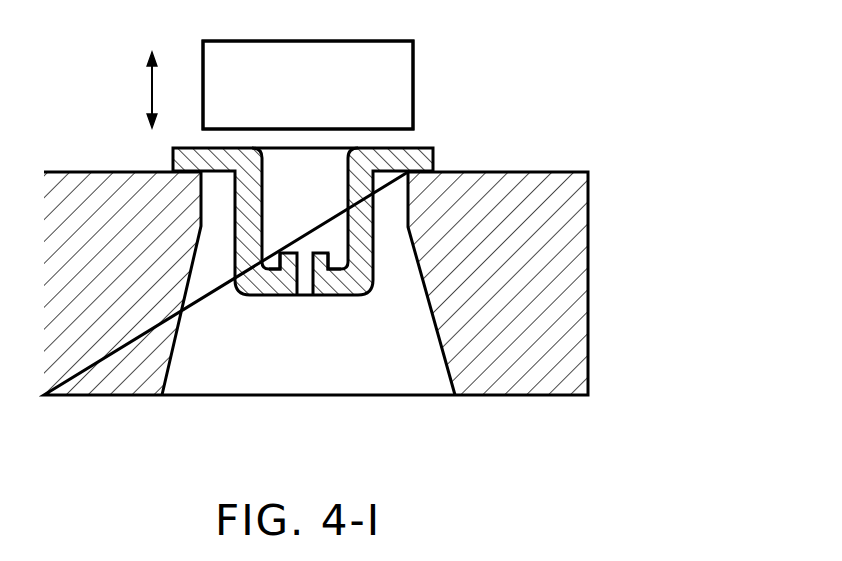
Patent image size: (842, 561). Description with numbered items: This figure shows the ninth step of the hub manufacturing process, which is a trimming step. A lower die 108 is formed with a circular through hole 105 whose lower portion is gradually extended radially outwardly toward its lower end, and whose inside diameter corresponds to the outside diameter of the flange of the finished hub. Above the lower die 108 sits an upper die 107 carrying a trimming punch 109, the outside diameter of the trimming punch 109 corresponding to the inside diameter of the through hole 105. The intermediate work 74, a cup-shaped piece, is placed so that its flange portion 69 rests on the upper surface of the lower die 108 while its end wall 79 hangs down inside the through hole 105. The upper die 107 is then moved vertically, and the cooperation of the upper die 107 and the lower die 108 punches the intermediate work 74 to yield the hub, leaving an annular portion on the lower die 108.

The flange portion 69 is at (422, 146).
The intermediate work 74 is at (267, 287).
The end wall 79 is at (340, 282).
The through hole 105 is at (433, 310).
The upper die 107 is at (416, 42).
The lower die 108 is at (578, 284).
The trimming punch 109 is at (398, 83).